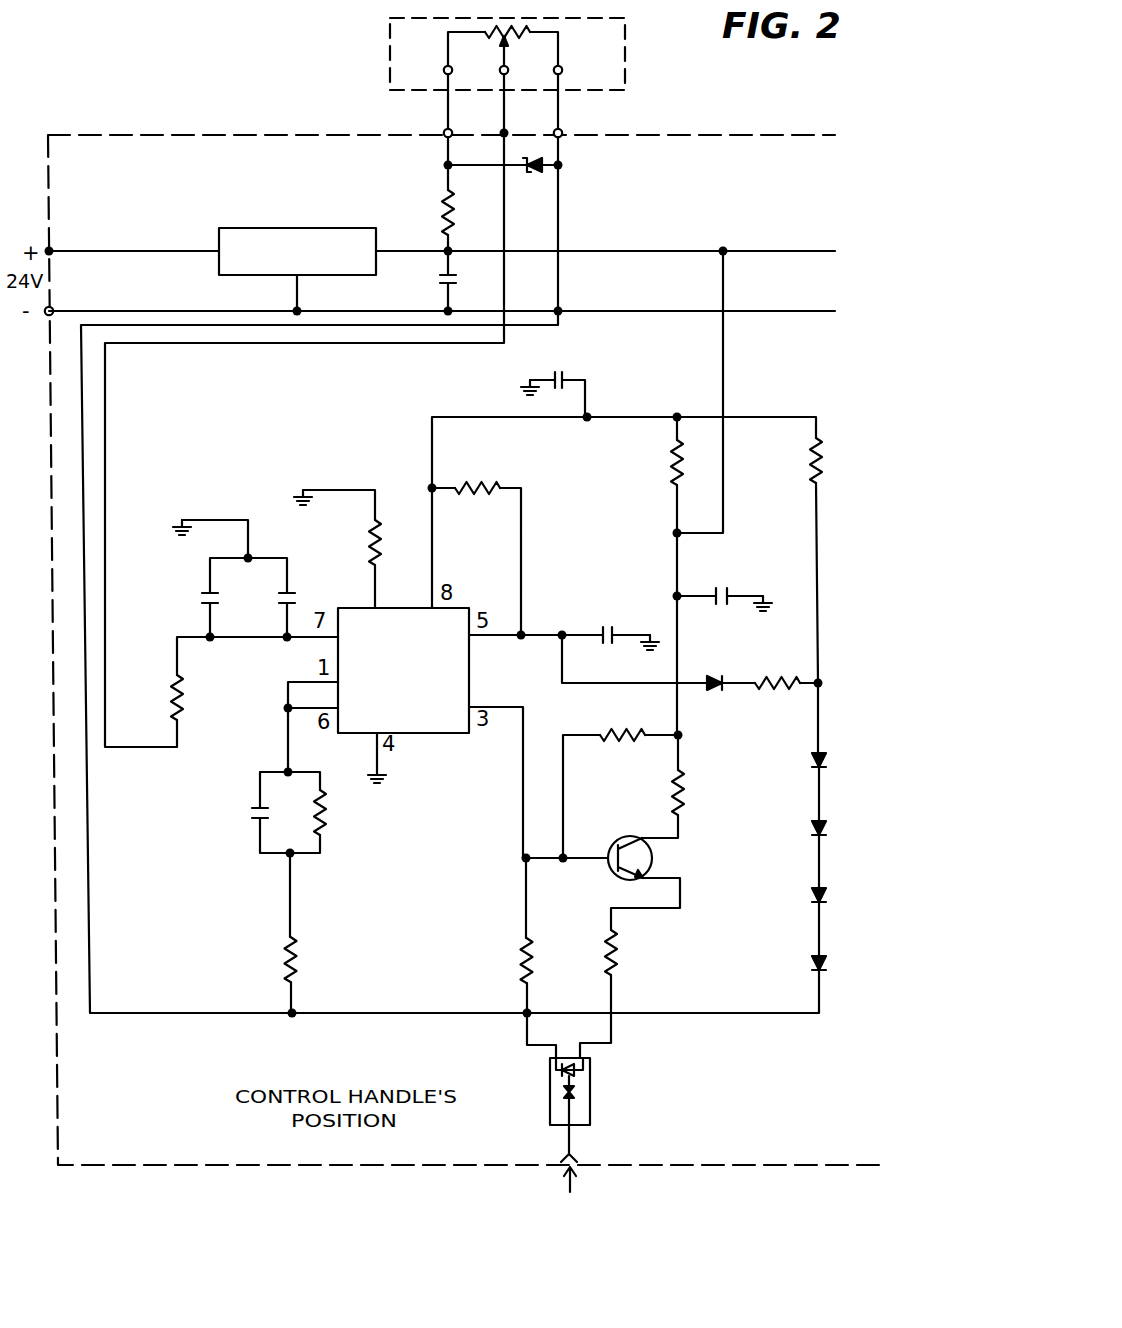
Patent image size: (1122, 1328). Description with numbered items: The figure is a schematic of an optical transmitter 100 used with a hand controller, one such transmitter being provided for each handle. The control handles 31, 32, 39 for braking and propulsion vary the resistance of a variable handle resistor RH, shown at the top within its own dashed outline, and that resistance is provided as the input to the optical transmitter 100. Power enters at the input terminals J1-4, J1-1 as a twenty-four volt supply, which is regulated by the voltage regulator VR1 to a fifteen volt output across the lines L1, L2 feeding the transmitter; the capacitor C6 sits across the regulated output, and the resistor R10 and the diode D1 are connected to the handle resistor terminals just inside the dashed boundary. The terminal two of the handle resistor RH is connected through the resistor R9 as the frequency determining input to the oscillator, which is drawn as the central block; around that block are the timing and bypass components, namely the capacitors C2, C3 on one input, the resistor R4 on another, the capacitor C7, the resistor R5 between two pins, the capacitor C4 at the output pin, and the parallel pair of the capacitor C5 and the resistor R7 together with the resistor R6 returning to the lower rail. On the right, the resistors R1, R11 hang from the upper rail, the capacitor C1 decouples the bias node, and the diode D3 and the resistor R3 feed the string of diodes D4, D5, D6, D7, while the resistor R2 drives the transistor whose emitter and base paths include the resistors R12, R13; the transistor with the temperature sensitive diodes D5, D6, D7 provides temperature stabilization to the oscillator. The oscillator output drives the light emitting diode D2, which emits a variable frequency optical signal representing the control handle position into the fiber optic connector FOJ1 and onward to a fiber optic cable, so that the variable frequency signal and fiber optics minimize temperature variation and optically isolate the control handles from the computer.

The optical transmitter 100 is at (195, 103).
The control handle 31 is at (586, 54).
The control handle 32 is at (586, 54).
The control handle 39 is at (586, 54).
The variable handle resistor RH is at (503, 48).
The voltage regulator VR1 is at (296, 264).
The diode D1 is at (531, 176).
The resistor R10 is at (469, 212).
The capacitor C6 is at (426, 285).
The line L1 is at (615, 250).
The line L2 is at (620, 310).
The input terminal J1-4 is at (74, 237).
The input terminal J1-1 is at (74, 297).
The capacitor C7 is at (559, 368).
The resistor R5 is at (477, 476).
The resistor R4 is at (359, 542).
The resistor R1 is at (658, 462).
The resistor R11 is at (794, 460).
The capacitor C1 is at (721, 582).
The capacitor C2 is at (193, 593).
The capacitor C3 is at (303, 593).
The resistor R9 is at (194, 697).
The capacitor C4 is at (601, 622).
The diode D3 is at (715, 669).
The resistor R3 is at (777, 669).
The resistor R2 is at (622, 722).
The capacitor C5 is at (241, 810).
The resistor R7 is at (337, 812).
The resistor R6 is at (271, 959).
The resistor R12 is at (500, 960).
The resistor R13 is at (635, 952).
The diode D4 is at (796, 765).
The temperature sensitive diode D5 is at (796, 833).
The temperature sensitive diode D6 is at (796, 899).
The temperature sensitive diode D7 is at (796, 967).
The light emitting diode D2 is at (595, 1102).
The fiber optic connector FOJ1 is at (616, 1157).